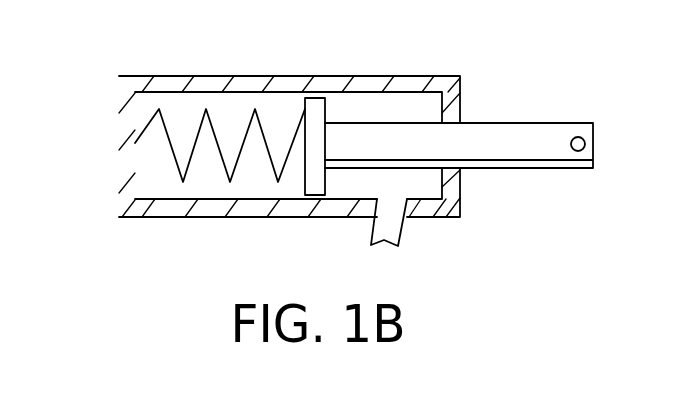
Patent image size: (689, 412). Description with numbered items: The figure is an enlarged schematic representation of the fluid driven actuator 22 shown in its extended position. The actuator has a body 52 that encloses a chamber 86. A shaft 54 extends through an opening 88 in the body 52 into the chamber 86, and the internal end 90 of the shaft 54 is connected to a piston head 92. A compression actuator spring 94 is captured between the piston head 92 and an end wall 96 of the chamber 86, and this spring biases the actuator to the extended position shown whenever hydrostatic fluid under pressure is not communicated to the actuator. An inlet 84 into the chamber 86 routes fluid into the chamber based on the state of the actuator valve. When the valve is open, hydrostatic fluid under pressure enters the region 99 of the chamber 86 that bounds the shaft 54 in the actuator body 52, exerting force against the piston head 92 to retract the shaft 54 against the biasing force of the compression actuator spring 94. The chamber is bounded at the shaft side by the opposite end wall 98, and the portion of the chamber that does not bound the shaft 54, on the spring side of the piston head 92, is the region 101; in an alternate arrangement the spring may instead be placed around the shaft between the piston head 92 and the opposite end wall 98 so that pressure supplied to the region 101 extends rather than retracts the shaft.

The fluid driven actuator 22 is at (338, 43).
The body 52 is at (289, 80).
The end wall 96 is at (138, 97).
The region 101 is at (200, 103).
The compression actuator spring 94 is at (150, 138).
The piston head 92 is at (313, 180).
The opening 88 is at (457, 160).
The shaft 54 is at (500, 130).
The inlet 84 is at (388, 233).
The internal end 90 is at (347, 172).
The opposite end wall 98 is at (433, 183).
The region 99 is at (367, 102).
The chamber 86 is at (422, 102).